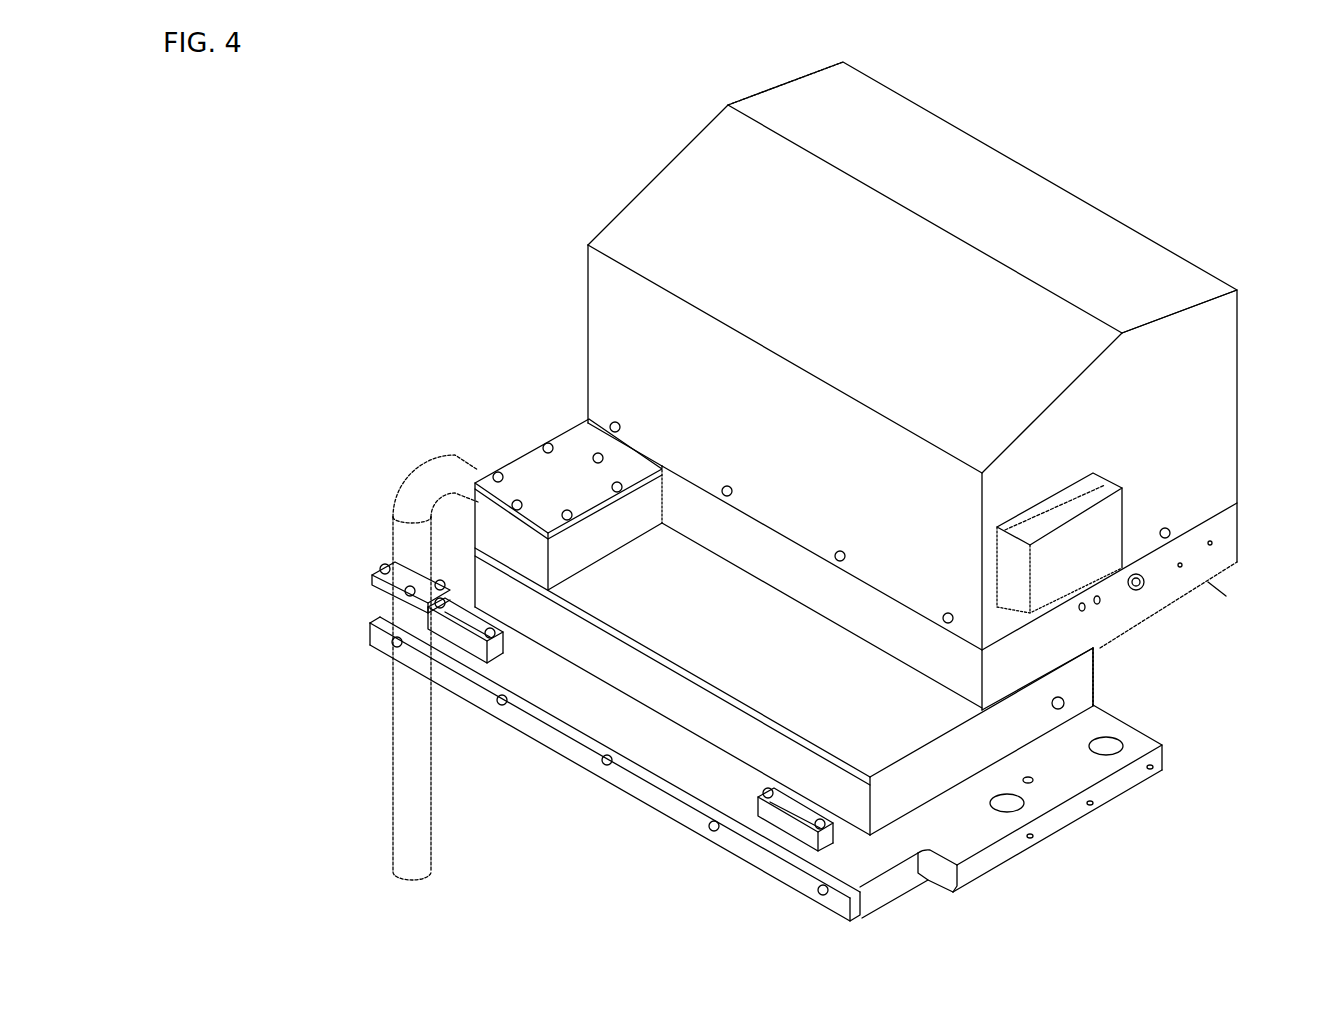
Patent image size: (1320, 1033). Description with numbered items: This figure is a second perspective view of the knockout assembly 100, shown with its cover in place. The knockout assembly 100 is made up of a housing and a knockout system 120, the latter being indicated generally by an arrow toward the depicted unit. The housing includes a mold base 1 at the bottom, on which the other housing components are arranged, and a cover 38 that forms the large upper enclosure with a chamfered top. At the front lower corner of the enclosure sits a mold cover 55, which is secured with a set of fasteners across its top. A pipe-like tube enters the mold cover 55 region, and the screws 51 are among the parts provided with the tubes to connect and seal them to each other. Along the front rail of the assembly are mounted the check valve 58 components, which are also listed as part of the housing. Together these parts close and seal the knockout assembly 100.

The knockout assembly 100 is at (346, 70).
The cover 38 is at (632, 201).
The mold cover 55 is at (521, 458).
The screws 51 is at (392, 474).
The check valve 58 is at (420, 617).
The mold base 1 is at (1078, 824).
The knockout system 120 is at (262, 893).